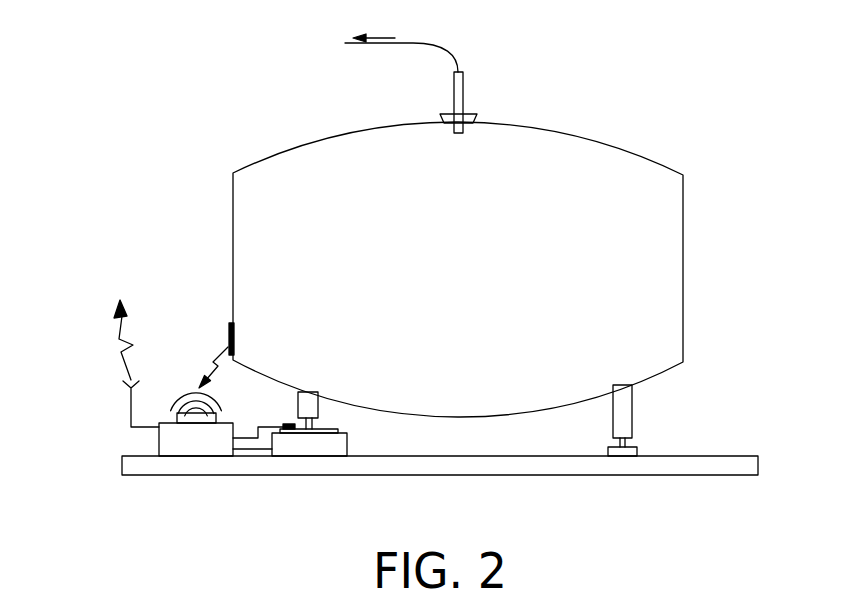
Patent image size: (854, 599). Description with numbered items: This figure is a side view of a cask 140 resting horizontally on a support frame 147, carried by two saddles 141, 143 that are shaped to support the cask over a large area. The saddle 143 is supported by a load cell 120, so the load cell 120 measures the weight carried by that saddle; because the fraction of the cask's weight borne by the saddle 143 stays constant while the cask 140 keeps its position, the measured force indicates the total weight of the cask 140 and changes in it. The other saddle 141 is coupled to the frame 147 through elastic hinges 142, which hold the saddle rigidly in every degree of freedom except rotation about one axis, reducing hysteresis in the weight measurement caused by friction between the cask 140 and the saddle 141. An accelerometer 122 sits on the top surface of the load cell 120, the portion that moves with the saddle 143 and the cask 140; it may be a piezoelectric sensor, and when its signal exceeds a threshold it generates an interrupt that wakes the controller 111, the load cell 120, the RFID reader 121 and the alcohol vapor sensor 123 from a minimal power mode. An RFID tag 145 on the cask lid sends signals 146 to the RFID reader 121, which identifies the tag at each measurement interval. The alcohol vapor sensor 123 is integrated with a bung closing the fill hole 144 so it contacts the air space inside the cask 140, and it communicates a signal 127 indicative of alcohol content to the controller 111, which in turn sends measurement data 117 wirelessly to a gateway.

The controller 111 is at (211, 450).
The measurement data 117 is at (120, 352).
The load cell 120 is at (325, 455).
The RFID reader 121 is at (216, 418).
The accelerometer 122 is at (285, 431).
The alcohol vapor sensor 123 is at (454, 94).
The signal 127 is at (381, 36).
The cask 140 is at (597, 141).
The saddle 141 is at (632, 400).
The elastic hinge 142 is at (625, 445).
The saddle 143 is at (318, 404).
The fill hole 144 is at (468, 114).
The RFID tag 145 is at (228, 331).
The signals 146 is at (212, 365).
The frame 147 is at (683, 476).